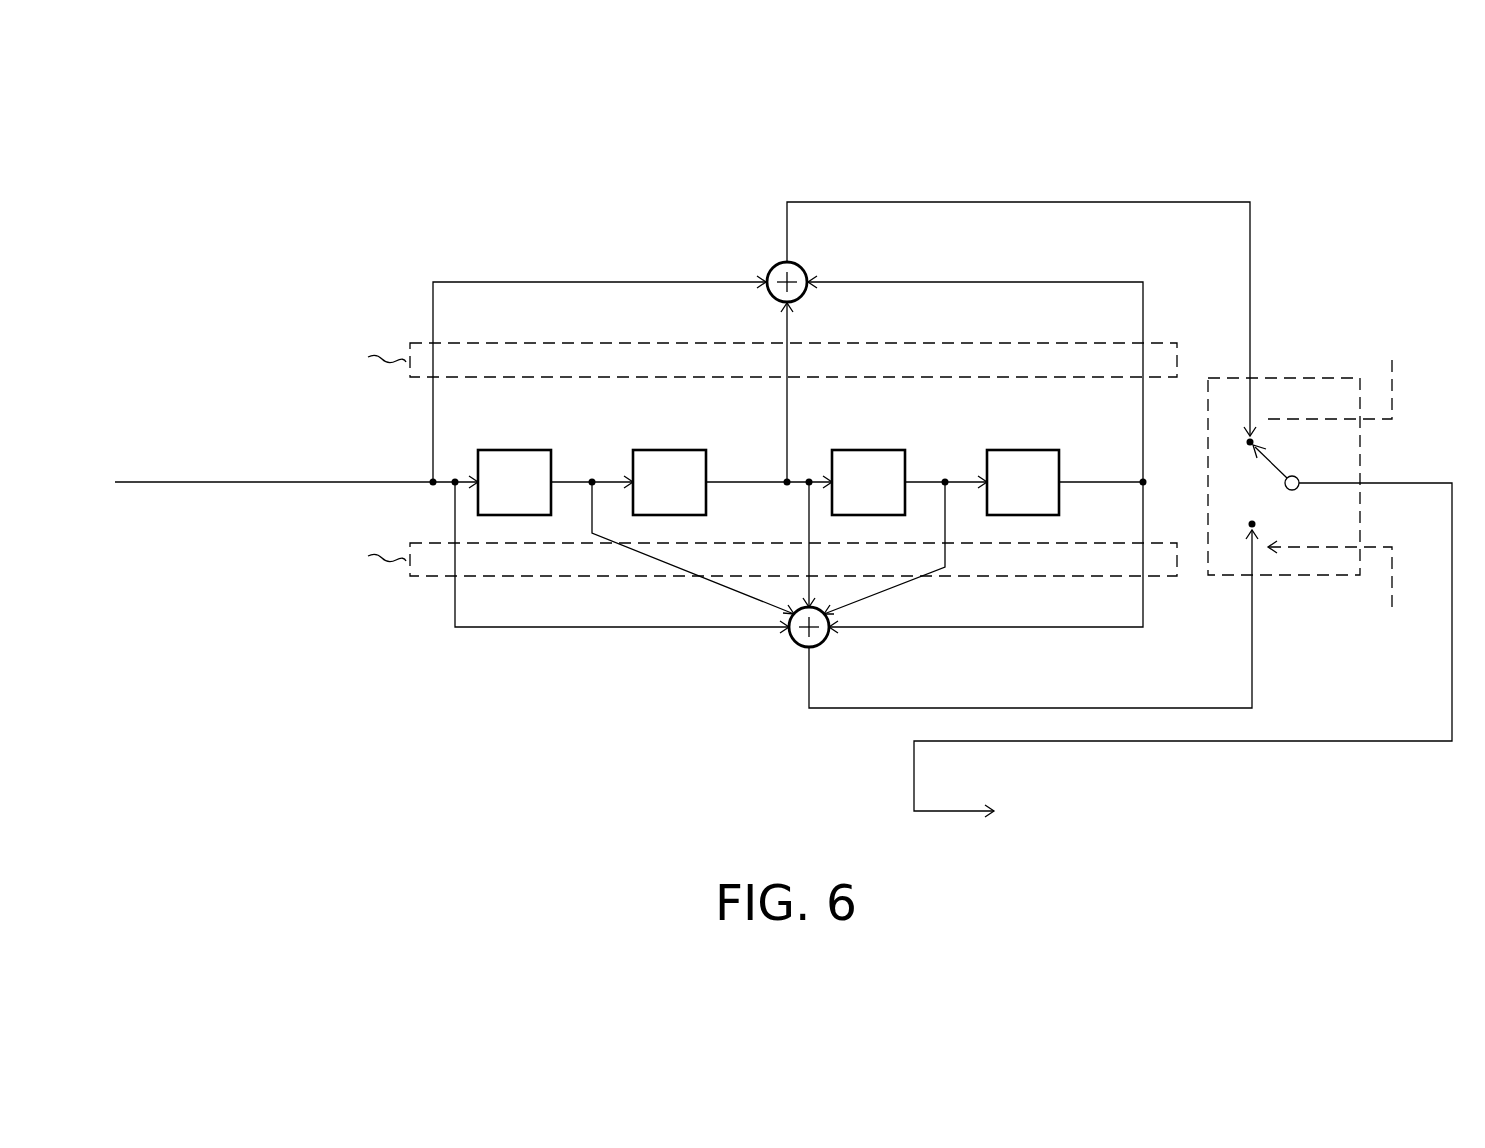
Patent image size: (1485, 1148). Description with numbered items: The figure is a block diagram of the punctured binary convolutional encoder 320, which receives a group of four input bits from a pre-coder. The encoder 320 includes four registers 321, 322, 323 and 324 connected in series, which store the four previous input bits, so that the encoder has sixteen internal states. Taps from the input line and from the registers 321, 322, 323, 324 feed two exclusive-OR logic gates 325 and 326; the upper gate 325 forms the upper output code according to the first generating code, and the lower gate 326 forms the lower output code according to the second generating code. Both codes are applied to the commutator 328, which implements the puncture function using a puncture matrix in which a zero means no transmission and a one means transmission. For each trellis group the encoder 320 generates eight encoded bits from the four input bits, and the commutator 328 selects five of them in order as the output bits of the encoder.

The punctured binary convolutional encoder 320 is at (1082, 133).
The register 321 is at (511, 450).
The register 322 is at (666, 450).
The register 323 is at (866, 450).
The register 324 is at (1021, 450).
The exclusive-OR logic gate 325 is at (801, 267).
The exclusive-OR logic gate 326 is at (797, 645).
The commutator 328 is at (1362, 446).